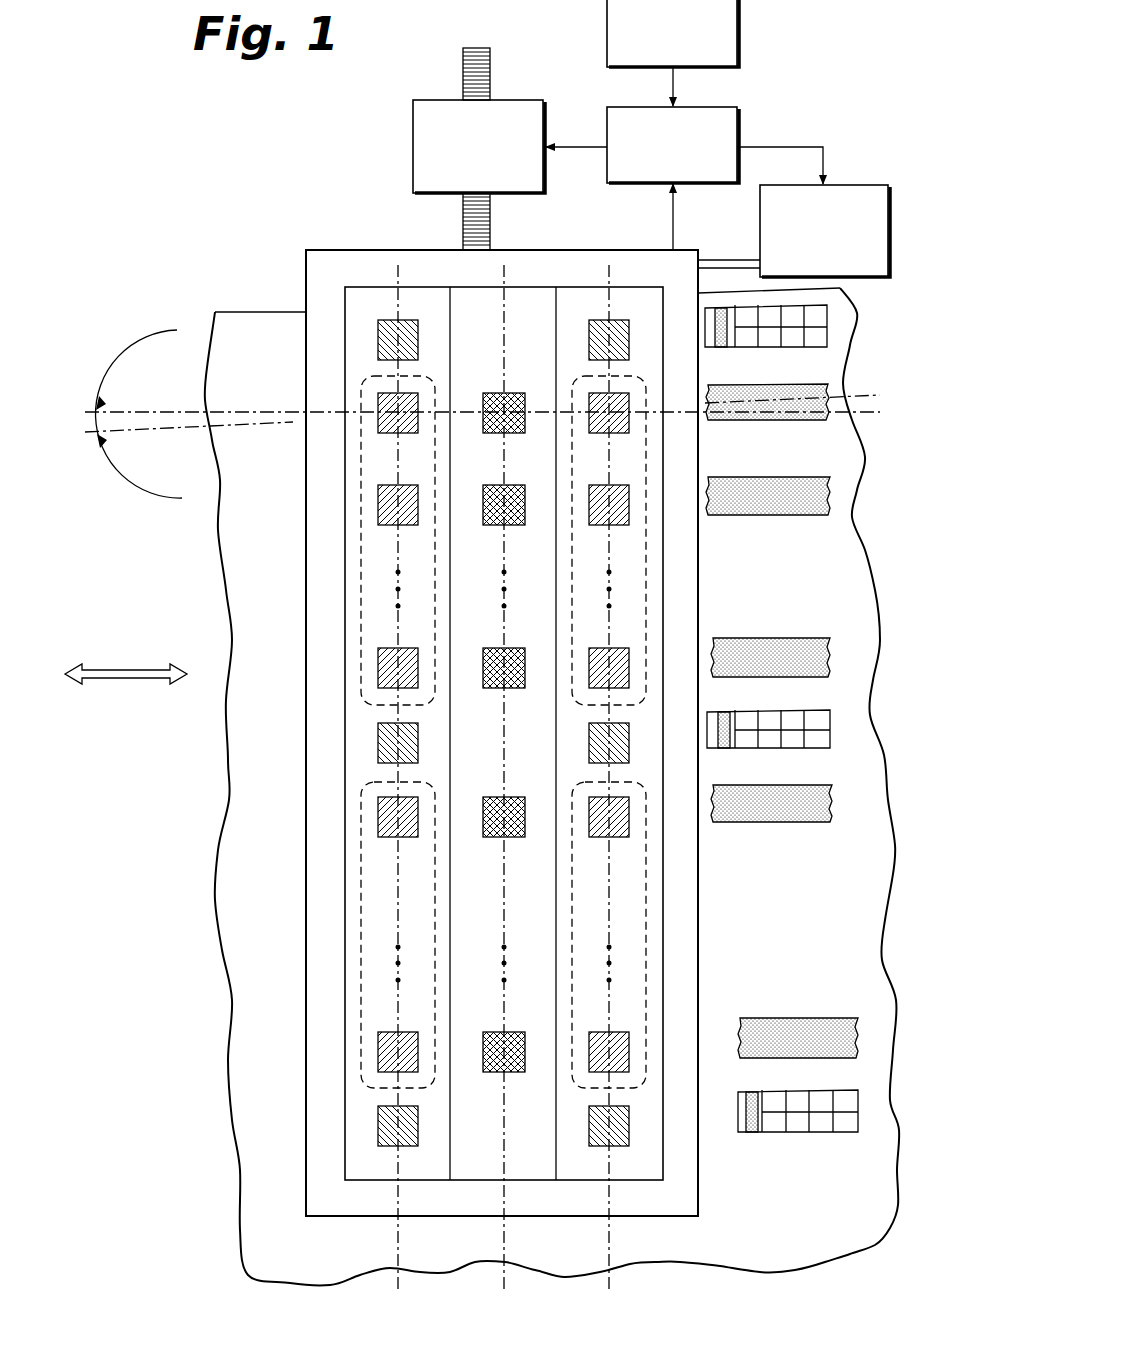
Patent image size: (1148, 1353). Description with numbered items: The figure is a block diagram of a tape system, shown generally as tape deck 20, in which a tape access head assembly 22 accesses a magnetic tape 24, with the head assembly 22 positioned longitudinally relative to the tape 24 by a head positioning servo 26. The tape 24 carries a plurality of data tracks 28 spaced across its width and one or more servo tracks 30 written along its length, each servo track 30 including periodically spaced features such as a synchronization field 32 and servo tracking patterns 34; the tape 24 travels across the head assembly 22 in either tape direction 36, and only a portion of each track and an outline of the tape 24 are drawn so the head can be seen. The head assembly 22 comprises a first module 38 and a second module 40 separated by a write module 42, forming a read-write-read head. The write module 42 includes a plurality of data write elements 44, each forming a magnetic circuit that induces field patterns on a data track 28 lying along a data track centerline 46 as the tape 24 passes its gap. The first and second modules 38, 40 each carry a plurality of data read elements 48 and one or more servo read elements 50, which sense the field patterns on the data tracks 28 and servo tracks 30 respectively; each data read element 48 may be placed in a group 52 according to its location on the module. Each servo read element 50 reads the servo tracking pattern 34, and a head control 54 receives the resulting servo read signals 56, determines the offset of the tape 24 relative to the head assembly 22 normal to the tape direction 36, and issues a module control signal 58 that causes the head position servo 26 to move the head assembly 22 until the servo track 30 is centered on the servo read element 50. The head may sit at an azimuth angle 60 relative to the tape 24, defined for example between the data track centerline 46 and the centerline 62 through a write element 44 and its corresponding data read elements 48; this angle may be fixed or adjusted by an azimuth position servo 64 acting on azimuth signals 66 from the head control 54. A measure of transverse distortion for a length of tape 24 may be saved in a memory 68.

The tape deck 20 is at (172, 128).
The tape access head assembly 22 is at (333, 250).
The magnetic tape 24 is at (262, 312).
The head positioning servo 26 is at (413, 135).
The data tracks 28 is at (745, 420).
The servo tracks 30 is at (742, 347).
The synchronization field 32 is at (721, 348).
The servo tracking patterns 34 is at (790, 300).
The tape direction 36 is at (123, 684).
The first module 38 is at (360, 287).
The second module 40 is at (624, 287).
The write module 42 is at (520, 287).
The data write elements 44 is at (510, 393).
The data track centerline 46 is at (868, 396).
The data read elements 48 is at (385, 433).
The servo read elements 50 is at (415, 335).
The group 52 is at (361, 537).
The head control 54 is at (737, 118).
The servo read signals 56 is at (673, 230).
The module control signal 58 is at (590, 147).
The azimuth angle 60 is at (125, 357).
The centerline 62 is at (872, 420).
The azimuth position servo 64 is at (862, 185).
The azimuth signals 66 is at (813, 147).
The memory 68 is at (737, 12).